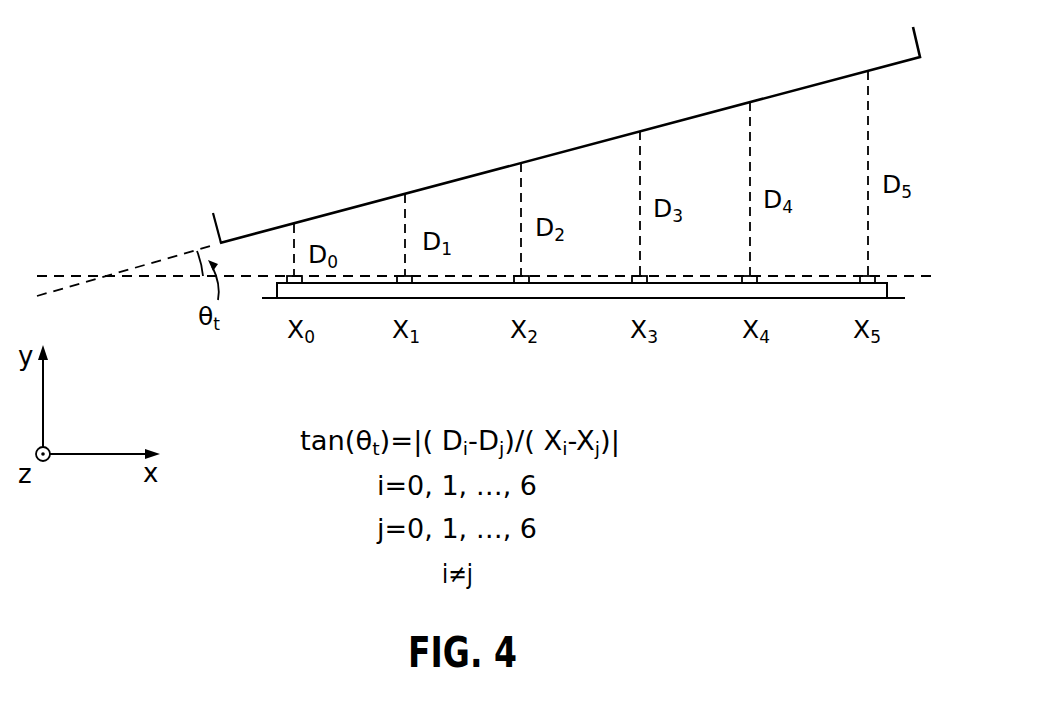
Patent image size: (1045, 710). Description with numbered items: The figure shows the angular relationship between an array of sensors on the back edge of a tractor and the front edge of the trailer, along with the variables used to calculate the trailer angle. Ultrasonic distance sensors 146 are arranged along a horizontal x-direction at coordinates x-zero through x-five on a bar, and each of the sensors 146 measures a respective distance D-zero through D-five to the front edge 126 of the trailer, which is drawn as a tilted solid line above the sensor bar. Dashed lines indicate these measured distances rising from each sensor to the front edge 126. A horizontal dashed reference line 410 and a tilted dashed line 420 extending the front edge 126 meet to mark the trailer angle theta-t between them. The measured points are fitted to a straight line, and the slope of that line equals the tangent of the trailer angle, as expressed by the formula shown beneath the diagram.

The front edge 126 is at (460, 178).
The tilted reference line 420 is at (168, 260).
The horizontal reference line 410 is at (173, 277).
The ultrasonic distance sensors 146 is at (889, 284).